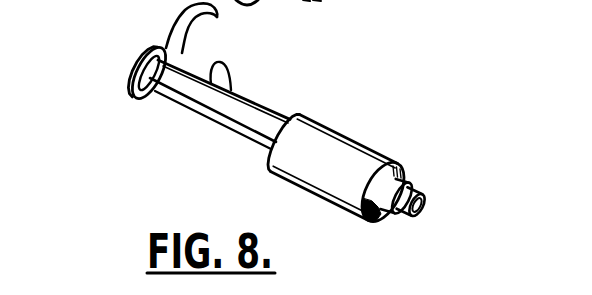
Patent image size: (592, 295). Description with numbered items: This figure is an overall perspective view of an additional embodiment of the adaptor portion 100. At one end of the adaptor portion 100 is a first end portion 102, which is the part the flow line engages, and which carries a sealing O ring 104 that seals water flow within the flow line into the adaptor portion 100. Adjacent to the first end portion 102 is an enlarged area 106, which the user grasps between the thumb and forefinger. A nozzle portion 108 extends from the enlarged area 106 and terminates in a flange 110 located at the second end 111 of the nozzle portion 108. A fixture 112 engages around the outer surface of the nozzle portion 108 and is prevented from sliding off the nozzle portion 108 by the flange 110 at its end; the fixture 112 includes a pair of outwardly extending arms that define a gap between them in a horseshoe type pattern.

The adaptor portion 100 is at (316, 94).
The first end portion 102 is at (428, 197).
The sealing O ring 104 is at (404, 185).
The enlarged area 106 is at (318, 186).
The nozzle portion 108 is at (240, 114).
The flange 110 is at (131, 66).
The second end 111 is at (136, 56).
The fixture 112 is at (168, 45).